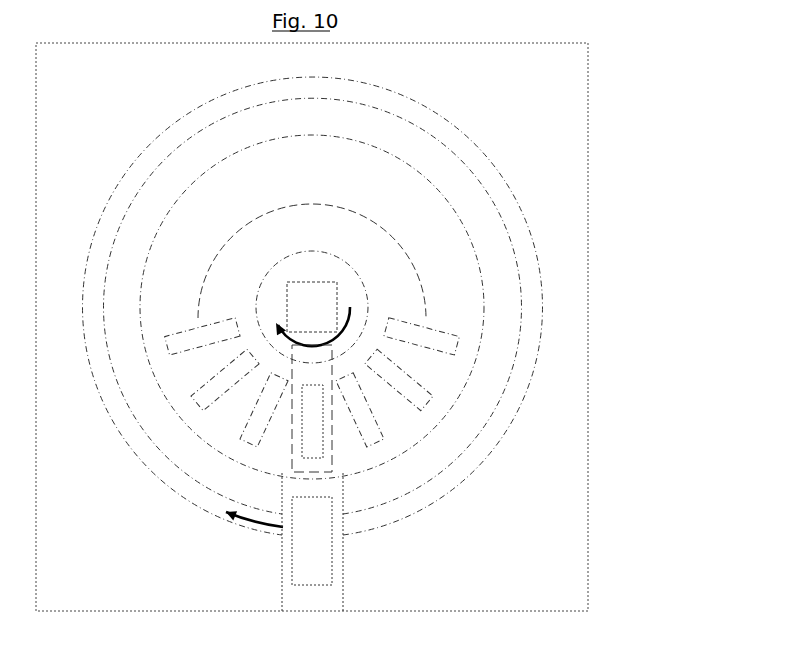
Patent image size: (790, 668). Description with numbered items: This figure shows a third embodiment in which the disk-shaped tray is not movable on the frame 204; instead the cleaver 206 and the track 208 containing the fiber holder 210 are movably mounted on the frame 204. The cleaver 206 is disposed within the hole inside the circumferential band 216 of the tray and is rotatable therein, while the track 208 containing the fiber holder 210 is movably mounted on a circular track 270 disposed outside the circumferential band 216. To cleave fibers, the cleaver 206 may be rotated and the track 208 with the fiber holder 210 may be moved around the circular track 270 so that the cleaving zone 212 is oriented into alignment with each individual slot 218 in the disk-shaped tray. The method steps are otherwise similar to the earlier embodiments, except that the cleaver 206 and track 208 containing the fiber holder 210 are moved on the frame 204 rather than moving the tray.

The frame 204 is at (587, 237).
The cleaver 206 is at (312, 307).
The track 208 is at (282, 565).
The fiber holder 210 is at (317, 560).
The cleaving zone 212 is at (332, 433).
The circumferential band 216 is at (202, 223).
The slot 218 is at (313, 427).
The circular track 270 is at (162, 467).